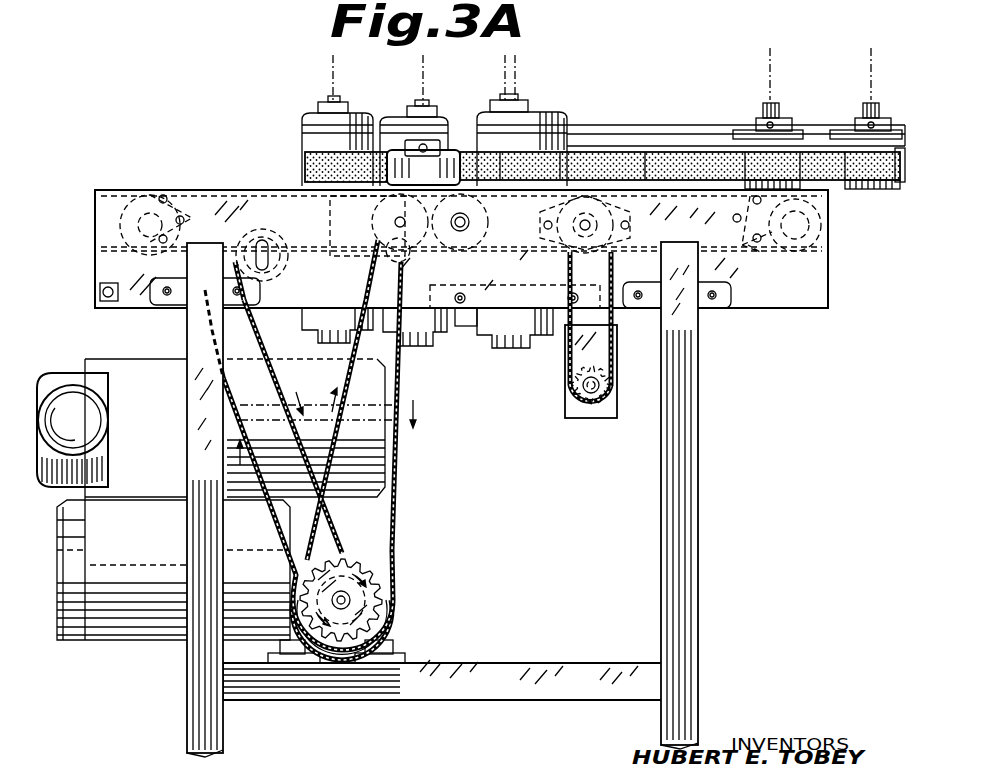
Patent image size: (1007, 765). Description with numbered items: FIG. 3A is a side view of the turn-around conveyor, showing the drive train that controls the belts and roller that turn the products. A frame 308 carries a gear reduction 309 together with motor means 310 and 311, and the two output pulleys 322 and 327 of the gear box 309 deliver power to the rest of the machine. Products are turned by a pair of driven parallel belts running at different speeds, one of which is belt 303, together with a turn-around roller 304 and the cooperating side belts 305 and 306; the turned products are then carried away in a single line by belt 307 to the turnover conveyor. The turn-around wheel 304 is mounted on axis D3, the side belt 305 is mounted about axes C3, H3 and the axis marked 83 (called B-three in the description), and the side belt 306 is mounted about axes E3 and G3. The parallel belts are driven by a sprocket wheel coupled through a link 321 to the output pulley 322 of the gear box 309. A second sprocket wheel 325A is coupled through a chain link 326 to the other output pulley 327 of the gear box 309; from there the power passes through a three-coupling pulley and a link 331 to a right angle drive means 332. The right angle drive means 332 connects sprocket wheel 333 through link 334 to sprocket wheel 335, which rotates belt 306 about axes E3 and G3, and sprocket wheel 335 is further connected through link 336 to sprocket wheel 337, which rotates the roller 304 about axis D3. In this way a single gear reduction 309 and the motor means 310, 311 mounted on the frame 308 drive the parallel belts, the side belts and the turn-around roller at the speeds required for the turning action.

The driven parallel belt 303 is at (95, 262).
The turn-around roller 304 is at (452, 165).
The side belt 305 is at (310, 167).
The side belt 306 is at (826, 172).
The belt 307 is at (748, 250).
The frame 308 is at (686, 548).
The gear reduction 309 is at (388, 530).
The motor means 310 is at (240, 617).
The motor means 311 is at (360, 464).
The link 321 is at (250, 320).
The output pulley 322 is at (372, 588).
The sprocket wheel 325A is at (336, 213).
The chain link 326 is at (403, 383).
The output pulley 327 is at (368, 622).
The link 331 is at (568, 378).
The right angle drive means 332 is at (598, 352).
The sprocket wheel 333 is at (612, 350).
The link 334 is at (541, 338).
The sprocket wheel 335 is at (497, 350).
The link 336 is at (504, 336).
The sprocket wheel 337 is at (428, 335).
The axis C3 is at (336, 68).
The axis D3 is at (426, 70).
The axis E3 is at (507, 68).
The axis 83 is at (516, 70).
The axis H3 is at (771, 66).
The axis G3 is at (872, 66).